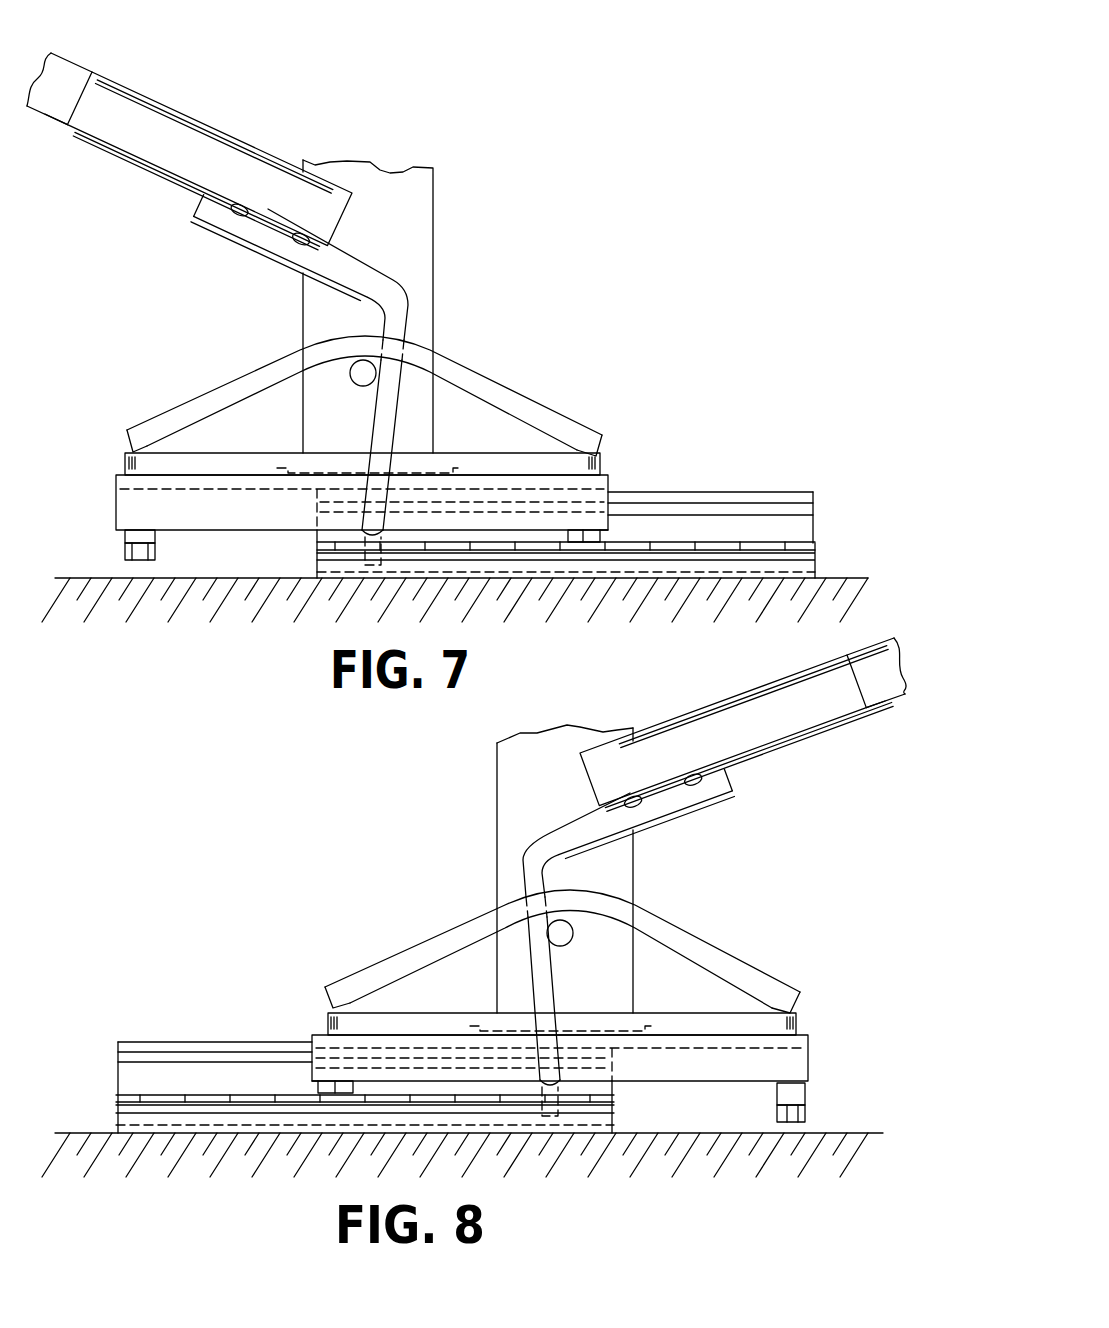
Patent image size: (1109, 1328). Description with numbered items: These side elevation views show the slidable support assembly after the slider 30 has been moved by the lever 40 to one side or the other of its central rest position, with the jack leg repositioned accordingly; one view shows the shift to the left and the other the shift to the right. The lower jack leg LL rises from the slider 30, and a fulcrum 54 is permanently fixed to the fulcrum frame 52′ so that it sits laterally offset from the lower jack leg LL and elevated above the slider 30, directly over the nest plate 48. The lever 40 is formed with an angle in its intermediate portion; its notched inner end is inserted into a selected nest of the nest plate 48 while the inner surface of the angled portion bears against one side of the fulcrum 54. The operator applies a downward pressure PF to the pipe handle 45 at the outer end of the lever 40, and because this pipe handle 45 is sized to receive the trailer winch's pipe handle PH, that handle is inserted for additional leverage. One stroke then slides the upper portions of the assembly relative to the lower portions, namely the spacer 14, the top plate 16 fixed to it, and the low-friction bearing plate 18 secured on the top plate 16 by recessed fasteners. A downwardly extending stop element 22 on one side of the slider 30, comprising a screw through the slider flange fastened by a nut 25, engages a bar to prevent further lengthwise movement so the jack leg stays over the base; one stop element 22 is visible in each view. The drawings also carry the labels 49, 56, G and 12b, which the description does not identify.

In FIG. 7, the downward pressure PF is at (96, 55).
In FIG. 8, the downward pressure PF is at (872, 645).
In FIG. 7, the pipe handle PH is at (56, 108).
In FIG. 8, the pipe handle PH is at (880, 700).
In FIG. 7, the lever 40 is at (231, 126).
In FIG. 8, the lever 40 is at (712, 697).
In FIG. 7, the pipe handle portion 45 is at (144, 147).
In FIG. 8, the pipe handle portion 45 is at (778, 727).
In FIG. 7, the bent tube / pivot post 49 is at (367, 283).
In FIG. 8, the bent tube / pivot post 49 is at (565, 832).
In FIG. 7, the lower jack leg LL is at (420, 273).
In FIG. 8, the lower jack leg LL is at (620, 870).
In FIG. 7, the fulcrum frame 52′ is at (518, 396).
In FIG. 8, the fulcrum frame 52′ is at (705, 946).
In FIG. 7, the fulcrum 54 is at (361, 386).
In FIG. 8, the fulcrum 54 is at (572, 940).
In FIG. 7, the base plate 56 is at (272, 453).
In FIG. 8, the base plate 56 is at (463, 1013).
In FIG. 7, the slider 30 is at (255, 522).
In FIG. 8, the slider 30 is at (730, 1077).
In FIG. 7, the stop element 22 is at (125, 537).
In FIG. 8, the stop element 22 is at (777, 1094).
In FIG. 7, the nut 25 is at (157, 550).
In FIG. 8, the nut 25 is at (806, 1110).
In FIG. 7, the ground G is at (117, 577).
In FIG. 8, the ground G is at (772, 1133).
In FIG. 7, the low-friction bearing plate 18 is at (750, 470).
In FIG. 8, the low-friction bearing plate 18 is at (207, 1042).
In FIG. 7, the top plate 16 is at (713, 512).
In FIG. 8, the top plate 16 is at (170, 1066).
In FIG. 7, the spacer 14 is at (790, 541).
In FIG. 8, the spacer 14 is at (255, 1092).
In FIG. 7, the nest plate 48 is at (817, 546).
In FIG. 8, the nest plate 48 is at (614, 1100).
In FIG. 7, the lower skid rail 12b is at (812, 567).
In FIG. 8, the lower skid rail 12b is at (614, 1125).